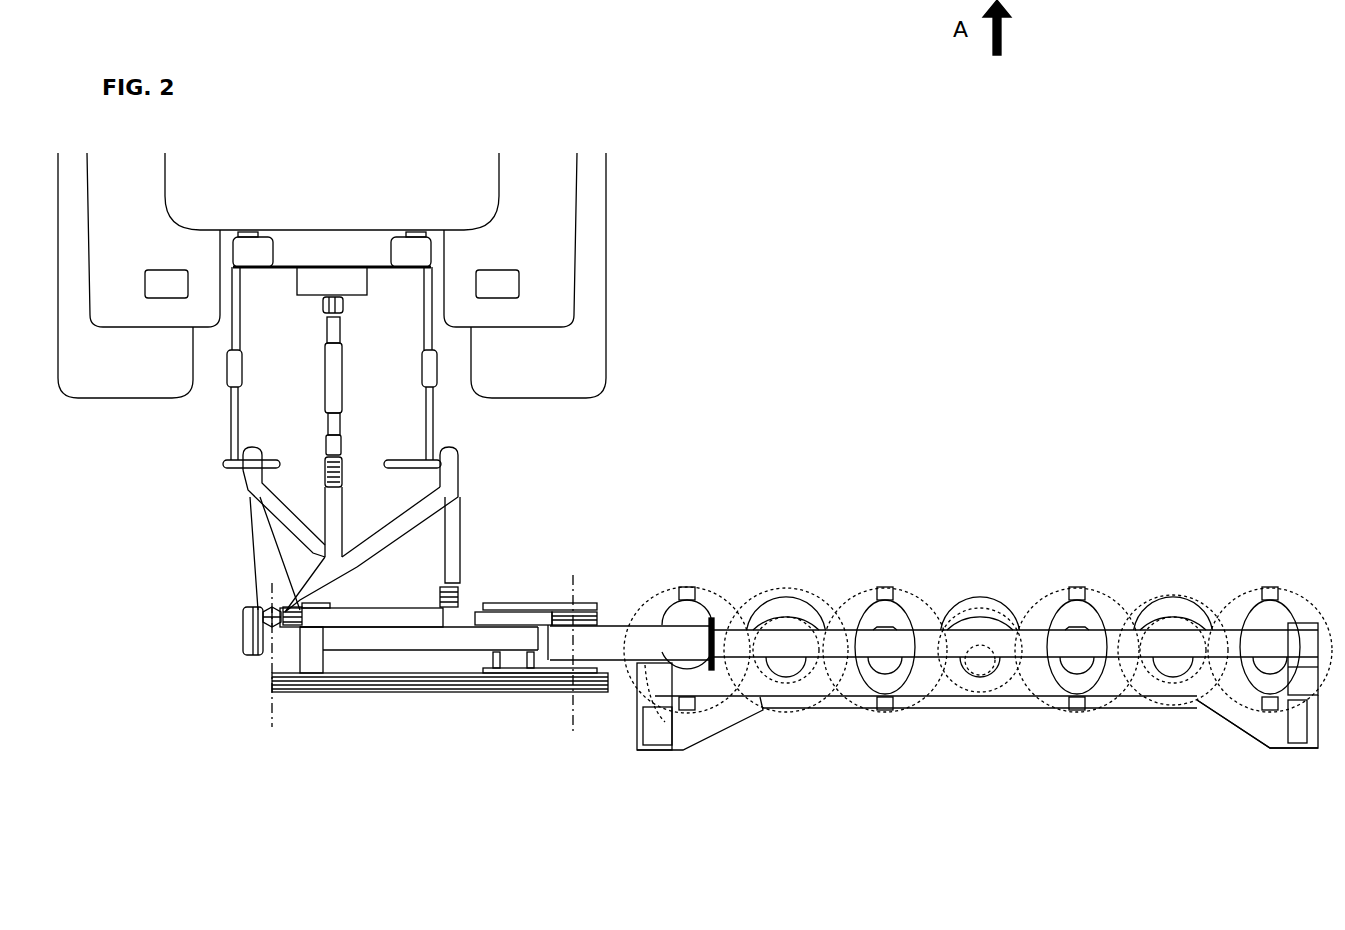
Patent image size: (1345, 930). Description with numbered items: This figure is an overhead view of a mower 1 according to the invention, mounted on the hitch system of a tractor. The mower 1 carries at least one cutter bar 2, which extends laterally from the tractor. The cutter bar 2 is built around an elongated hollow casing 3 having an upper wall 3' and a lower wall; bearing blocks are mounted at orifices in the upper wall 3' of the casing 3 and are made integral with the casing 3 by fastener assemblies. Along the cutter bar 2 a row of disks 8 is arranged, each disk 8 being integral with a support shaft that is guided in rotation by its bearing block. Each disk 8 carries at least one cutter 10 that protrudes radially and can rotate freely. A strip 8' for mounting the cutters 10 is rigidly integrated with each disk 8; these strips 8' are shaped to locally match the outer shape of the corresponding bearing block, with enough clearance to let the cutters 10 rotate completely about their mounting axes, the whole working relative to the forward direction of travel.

The mower 1 is at (596, 762).
The cutter bar 2 is at (979, 560).
The elongated hollow casing 3 is at (736, 742).
The upper wall 3' is at (1257, 724).
The disk 8 is at (978, 616).
The strip 8' is at (1173, 612).
The cutter 10 is at (1081, 588).